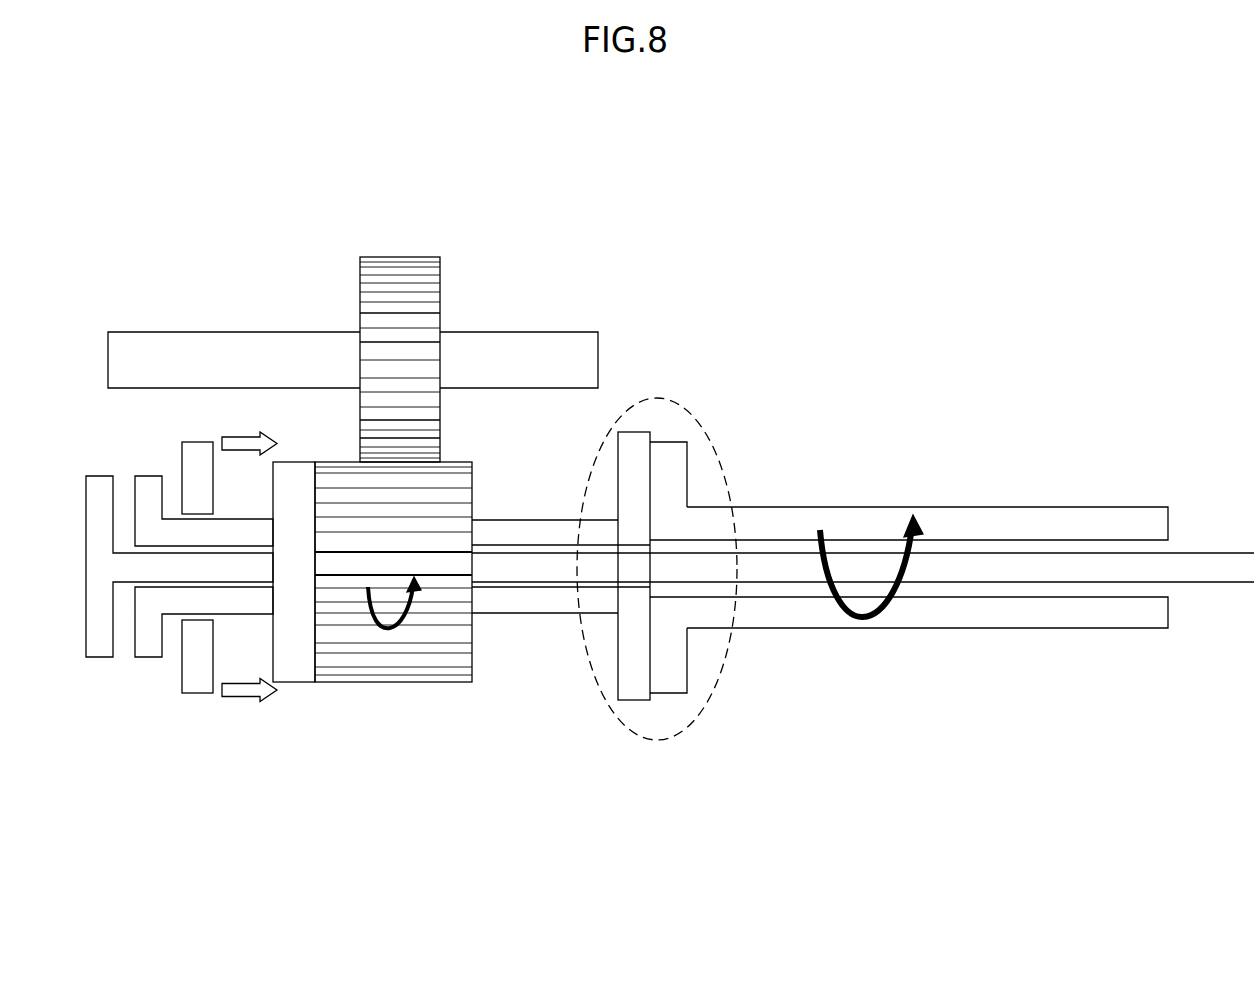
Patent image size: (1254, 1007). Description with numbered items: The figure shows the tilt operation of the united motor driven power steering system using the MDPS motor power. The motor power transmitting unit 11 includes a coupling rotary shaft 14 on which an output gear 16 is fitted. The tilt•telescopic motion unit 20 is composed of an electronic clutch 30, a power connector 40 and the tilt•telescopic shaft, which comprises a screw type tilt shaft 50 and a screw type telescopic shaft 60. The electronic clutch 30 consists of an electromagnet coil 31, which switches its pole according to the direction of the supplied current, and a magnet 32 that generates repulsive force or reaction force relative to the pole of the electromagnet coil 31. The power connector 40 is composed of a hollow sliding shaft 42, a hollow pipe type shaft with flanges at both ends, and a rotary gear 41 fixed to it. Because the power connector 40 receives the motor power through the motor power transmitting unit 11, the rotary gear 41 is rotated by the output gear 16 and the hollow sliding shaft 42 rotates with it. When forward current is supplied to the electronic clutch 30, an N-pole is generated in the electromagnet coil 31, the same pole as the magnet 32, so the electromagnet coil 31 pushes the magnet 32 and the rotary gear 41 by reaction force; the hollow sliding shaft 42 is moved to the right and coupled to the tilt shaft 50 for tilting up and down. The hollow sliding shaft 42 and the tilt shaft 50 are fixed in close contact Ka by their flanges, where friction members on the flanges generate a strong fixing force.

The motor power transmitting unit 11 is at (330, 158).
The coupling rotary shaft 14 is at (268, 350).
The output gear 16 is at (407, 280).
The tilt•telescopic motion unit 20 is at (1066, 676).
The electronic clutch 30 is at (212, 787).
The electromagnet coil 31 is at (195, 683).
The magnet 32 is at (297, 668).
The power connector 40 is at (523, 787).
The rotary gear 41 is at (420, 655).
The hollow sliding shaft 42 is at (563, 600).
The tilt shaft 50 is at (785, 523).
The telescopic shaft 60 is at (997, 568).
The close contact Ka is at (673, 400).